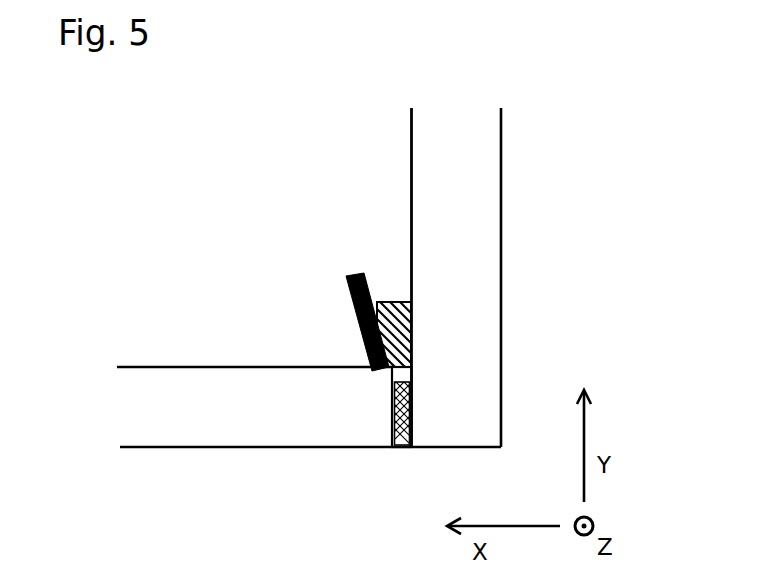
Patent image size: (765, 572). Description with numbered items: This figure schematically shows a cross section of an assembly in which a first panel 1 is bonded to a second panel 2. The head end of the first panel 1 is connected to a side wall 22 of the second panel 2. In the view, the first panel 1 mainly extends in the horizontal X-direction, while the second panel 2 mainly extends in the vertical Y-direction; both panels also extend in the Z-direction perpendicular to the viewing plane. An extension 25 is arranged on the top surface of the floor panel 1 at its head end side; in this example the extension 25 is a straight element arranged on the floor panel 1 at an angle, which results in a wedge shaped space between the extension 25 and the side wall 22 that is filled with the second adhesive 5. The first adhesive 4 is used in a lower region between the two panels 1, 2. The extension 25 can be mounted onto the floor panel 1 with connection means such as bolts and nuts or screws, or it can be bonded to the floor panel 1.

The first panel 1 is at (145, 380).
The second panel 2 is at (493, 145).
The side wall 22 is at (413, 230).
The first adhesive 4 is at (392, 417).
The second adhesive 5 is at (403, 328).
The extension 25 is at (350, 280).